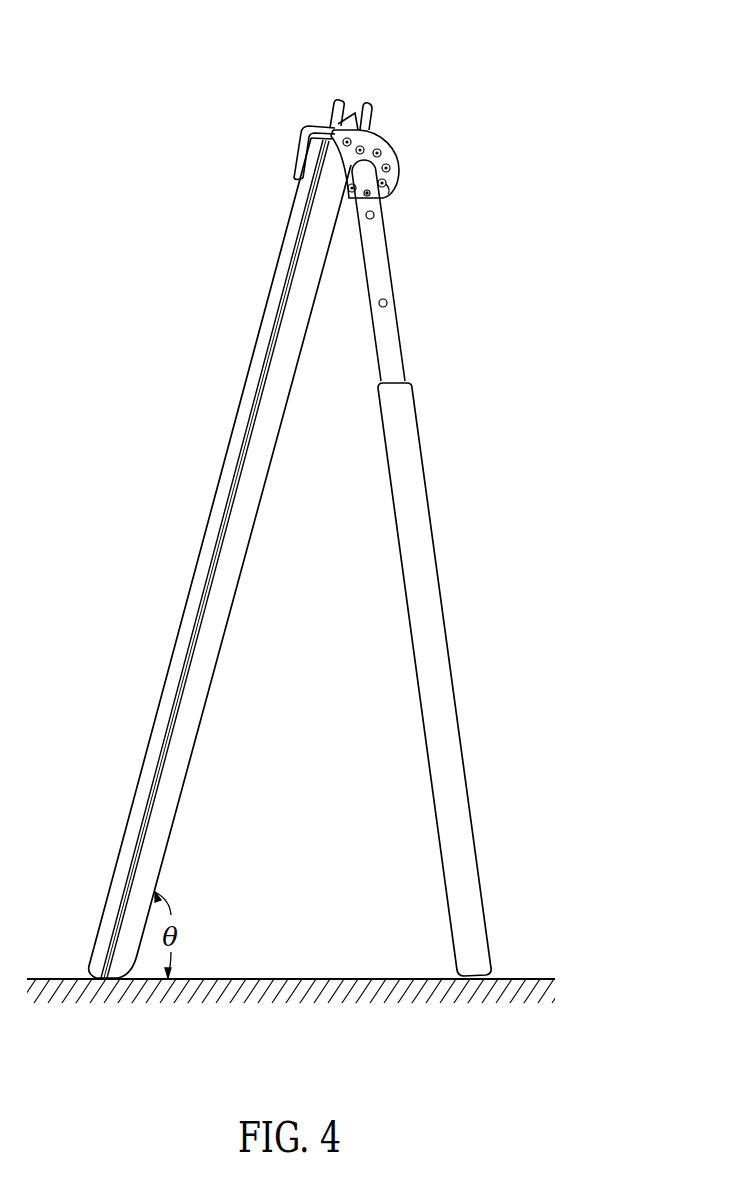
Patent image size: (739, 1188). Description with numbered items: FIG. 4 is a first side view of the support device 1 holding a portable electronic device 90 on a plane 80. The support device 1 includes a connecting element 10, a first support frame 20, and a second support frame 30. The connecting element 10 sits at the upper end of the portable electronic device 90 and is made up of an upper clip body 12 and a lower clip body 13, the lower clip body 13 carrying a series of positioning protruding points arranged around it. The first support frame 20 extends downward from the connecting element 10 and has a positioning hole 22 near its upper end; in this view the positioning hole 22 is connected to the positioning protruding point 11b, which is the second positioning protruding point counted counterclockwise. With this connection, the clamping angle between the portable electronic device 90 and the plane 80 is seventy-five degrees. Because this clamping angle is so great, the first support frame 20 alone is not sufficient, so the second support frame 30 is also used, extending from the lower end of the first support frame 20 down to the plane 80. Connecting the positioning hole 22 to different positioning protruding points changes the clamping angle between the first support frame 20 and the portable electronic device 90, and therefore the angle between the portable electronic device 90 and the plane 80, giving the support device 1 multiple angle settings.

The support device 1 is at (400, 96).
The connecting element 10 is at (318, 133).
The positioning protruding point 11b is at (388, 189).
The upper clip body 12 is at (300, 143).
The lower clip body 13 is at (387, 157).
The first support frame 20 is at (385, 343).
The positioning hole 22 is at (366, 197).
The second support frame 30 is at (433, 673).
The plane 80 is at (538, 978).
The portable electronic device 90 is at (228, 481).